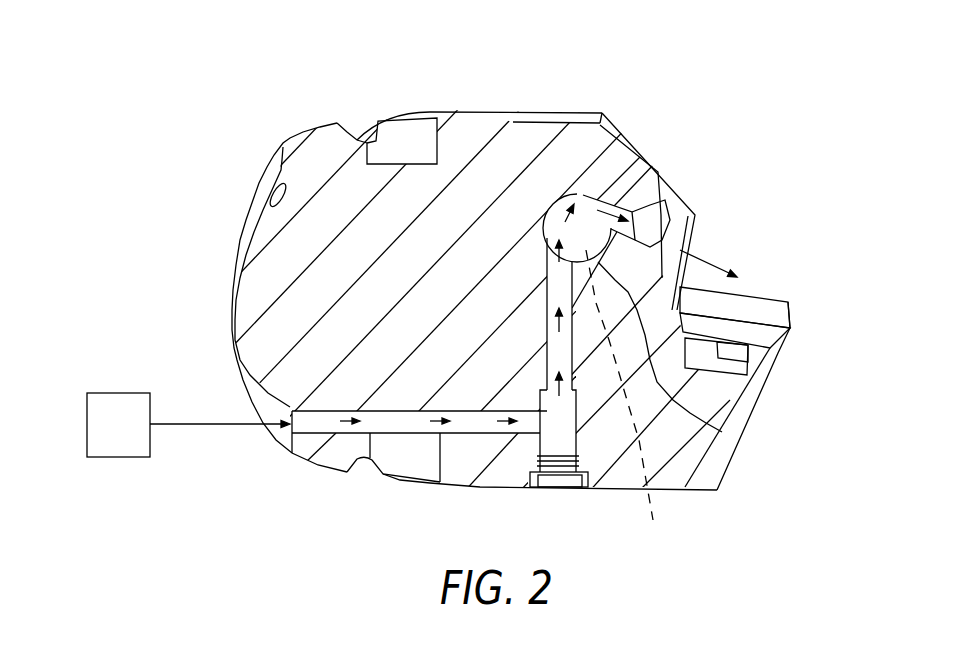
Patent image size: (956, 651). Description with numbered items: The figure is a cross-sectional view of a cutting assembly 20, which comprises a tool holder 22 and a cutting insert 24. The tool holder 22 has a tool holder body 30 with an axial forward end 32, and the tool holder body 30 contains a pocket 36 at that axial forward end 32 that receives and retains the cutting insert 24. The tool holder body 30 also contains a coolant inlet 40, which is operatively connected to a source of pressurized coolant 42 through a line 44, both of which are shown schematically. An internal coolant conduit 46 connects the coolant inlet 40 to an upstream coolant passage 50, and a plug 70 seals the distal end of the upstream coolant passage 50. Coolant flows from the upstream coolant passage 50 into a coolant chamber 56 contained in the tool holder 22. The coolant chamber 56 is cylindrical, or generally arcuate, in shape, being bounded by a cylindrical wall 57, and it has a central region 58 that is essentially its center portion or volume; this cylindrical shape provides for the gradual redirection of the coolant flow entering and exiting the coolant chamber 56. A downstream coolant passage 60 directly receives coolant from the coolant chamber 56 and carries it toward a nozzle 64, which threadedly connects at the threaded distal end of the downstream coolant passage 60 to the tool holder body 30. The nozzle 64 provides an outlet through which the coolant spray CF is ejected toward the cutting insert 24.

The cutting assembly 20 is at (214, 120).
The tool holder 22 is at (297, 164).
The cutting insert 24 is at (794, 298).
The tool holder body 30 is at (468, 143).
The axial forward end 32 is at (780, 372).
The pocket 36 is at (773, 343).
The coolant inlet 40 is at (290, 415).
The source of pressurized coolant 42 is at (104, 440).
The line 44 is at (207, 423).
The internal coolant conduit 46 is at (390, 423).
The upstream coolant passage 50 is at (547, 265).
The coolant chamber 56 is at (730, 437).
The cylindrical wall 57 is at (632, 409).
The central region 58 is at (586, 218).
The downstream coolant passage 60 is at (648, 192).
The nozzle 64 is at (655, 232).
The plug 70 is at (563, 476).
The coolant spray CF is at (728, 268).